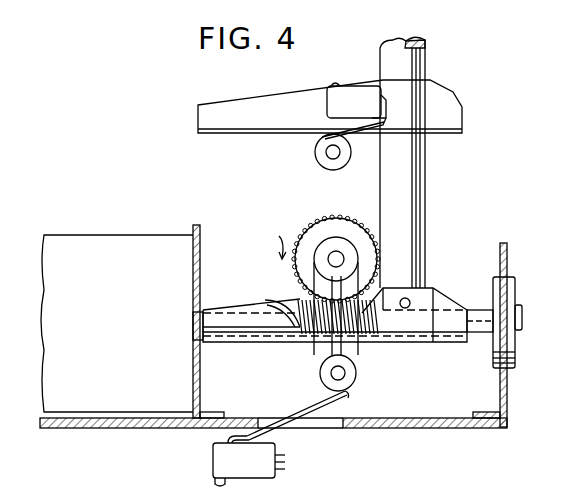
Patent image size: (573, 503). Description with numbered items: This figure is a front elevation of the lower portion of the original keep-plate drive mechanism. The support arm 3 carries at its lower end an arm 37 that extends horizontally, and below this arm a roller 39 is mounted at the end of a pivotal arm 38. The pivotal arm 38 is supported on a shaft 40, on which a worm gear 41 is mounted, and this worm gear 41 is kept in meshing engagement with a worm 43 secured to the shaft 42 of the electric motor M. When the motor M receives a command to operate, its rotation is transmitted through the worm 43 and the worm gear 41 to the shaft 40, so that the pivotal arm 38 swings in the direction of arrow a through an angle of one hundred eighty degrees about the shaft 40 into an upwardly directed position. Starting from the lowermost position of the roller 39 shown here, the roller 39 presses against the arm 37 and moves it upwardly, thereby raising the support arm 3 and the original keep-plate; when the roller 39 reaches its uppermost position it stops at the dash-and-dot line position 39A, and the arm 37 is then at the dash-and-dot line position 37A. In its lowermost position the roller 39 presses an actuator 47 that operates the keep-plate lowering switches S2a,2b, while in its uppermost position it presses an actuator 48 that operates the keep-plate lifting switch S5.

The electric motor M is at (147, 235).
The support arm 3 is at (424, 47).
The dash-and-dot line position of arm 37A is at (445, 88).
The keep-plate lifting switch S5 is at (352, 88).
The dash-and-dot line position of roller 39A is at (331, 170).
The actuator 48 is at (318, 140).
The worm gear 41 is at (352, 218).
The shaft 40 is at (330, 254).
The arrow a is at (279, 238).
The roller 39 is at (357, 373).
The arm 37 is at (412, 343).
The worm 43 is at (300, 311).
The pivotal arm 38 is at (325, 342).
The shaft of electric motor 42 is at (477, 310).
The actuator 47 is at (308, 408).
The keep-plate lowering switches S2a,2b is at (278, 468).